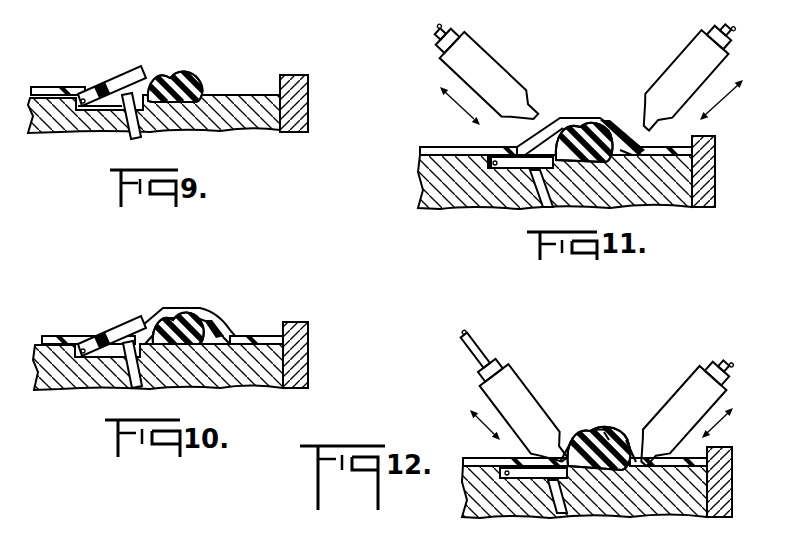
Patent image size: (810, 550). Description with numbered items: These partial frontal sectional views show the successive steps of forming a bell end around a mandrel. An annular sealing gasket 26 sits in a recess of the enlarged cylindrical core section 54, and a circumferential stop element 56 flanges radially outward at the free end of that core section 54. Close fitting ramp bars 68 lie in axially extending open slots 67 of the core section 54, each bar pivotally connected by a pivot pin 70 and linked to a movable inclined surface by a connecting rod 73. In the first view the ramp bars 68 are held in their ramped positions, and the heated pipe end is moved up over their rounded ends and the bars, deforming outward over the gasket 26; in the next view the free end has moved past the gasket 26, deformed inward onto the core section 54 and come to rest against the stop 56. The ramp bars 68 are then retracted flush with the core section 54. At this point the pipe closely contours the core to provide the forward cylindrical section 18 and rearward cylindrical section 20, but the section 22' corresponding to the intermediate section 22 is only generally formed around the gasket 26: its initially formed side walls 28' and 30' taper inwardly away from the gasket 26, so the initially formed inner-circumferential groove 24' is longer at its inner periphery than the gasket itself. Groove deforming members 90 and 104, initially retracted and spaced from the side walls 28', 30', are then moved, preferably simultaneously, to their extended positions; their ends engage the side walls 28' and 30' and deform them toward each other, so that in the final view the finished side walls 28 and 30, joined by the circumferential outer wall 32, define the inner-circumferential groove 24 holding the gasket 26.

In FIG. 11, the forward cylindrical section 18 is at (660, 153).
In FIG. 12, the forward cylindrical section 18 is at (697, 462).
In FIG. 11, the rearward cylindrical section 20 is at (437, 148).
In FIG. 12, the rearward cylindrical section 20 is at (480, 460).
In FIG. 12, the intermediate section 22 is at (599, 411).
In FIG. 11, the initially formed intermediate section 22' is at (580, 80).
In FIG. 12, the inner-circumferential groove 24 is at (619, 411).
In FIG. 11, the initially formed inner-circumferential groove 24' is at (618, 190).
In FIG. 9, the annular sealing gasket 26 is at (187, 74).
In FIG. 10, the annular sealing gasket 26 is at (187, 320).
In FIG. 11, the annular sealing gasket 26 is at (581, 138).
In FIG. 12, the circumferential side wall 28 is at (647, 412).
In FIG. 11, the initially formed circumferential side wall 28' is at (622, 117).
In FIG. 12, the circumferential side wall 30 is at (558, 425).
In FIG. 11, the initially formed circumferential side wall 30' is at (544, 109).
In FIG. 12, the circumferential outer wall 32 is at (600, 430).
In FIG. 9, the enlarged cylindrical core section 54 is at (250, 96).
In FIG. 10, the enlarged cylindrical core section 54 is at (263, 370).
In FIG. 11, the enlarged cylindrical core section 54 is at (673, 197).
In FIG. 12, the enlarged cylindrical core section 54 is at (637, 507).
In FIG. 9, the circumferential stop element 56 is at (307, 83).
In FIG. 10, the circumferential stop element 56 is at (305, 355).
In FIG. 11, the circumferential stop element 56 is at (715, 160).
In FIG. 12, the circumferential stop element 56 is at (732, 487).
In FIG. 9, the open slot 67 is at (97, 113).
In FIG. 9, the ramp bar 68 is at (97, 96).
In FIG. 10, the ramp bar 68 is at (100, 338).
In FIG. 11, the ramp bar 68 is at (512, 168).
In FIG. 12, the ramp bar 68 is at (523, 478).
In FIG. 10, the pivot pin 70 is at (82, 347).
In FIG. 9, the connecting rod 73 is at (128, 135).
In FIG. 10, the connecting rod 73 is at (134, 390).
In FIG. 11, the connecting rod 73 is at (545, 206).
In FIG. 12, the connecting rod 73 is at (562, 508).
In FIG. 11, the groove deforming member 90 is at (683, 63).
In FIG. 12, the groove deforming member 90 is at (690, 375).
In FIG. 11, the groove deforming member 104 is at (483, 60).
In FIG. 12, the groove deforming member 104 is at (483, 402).